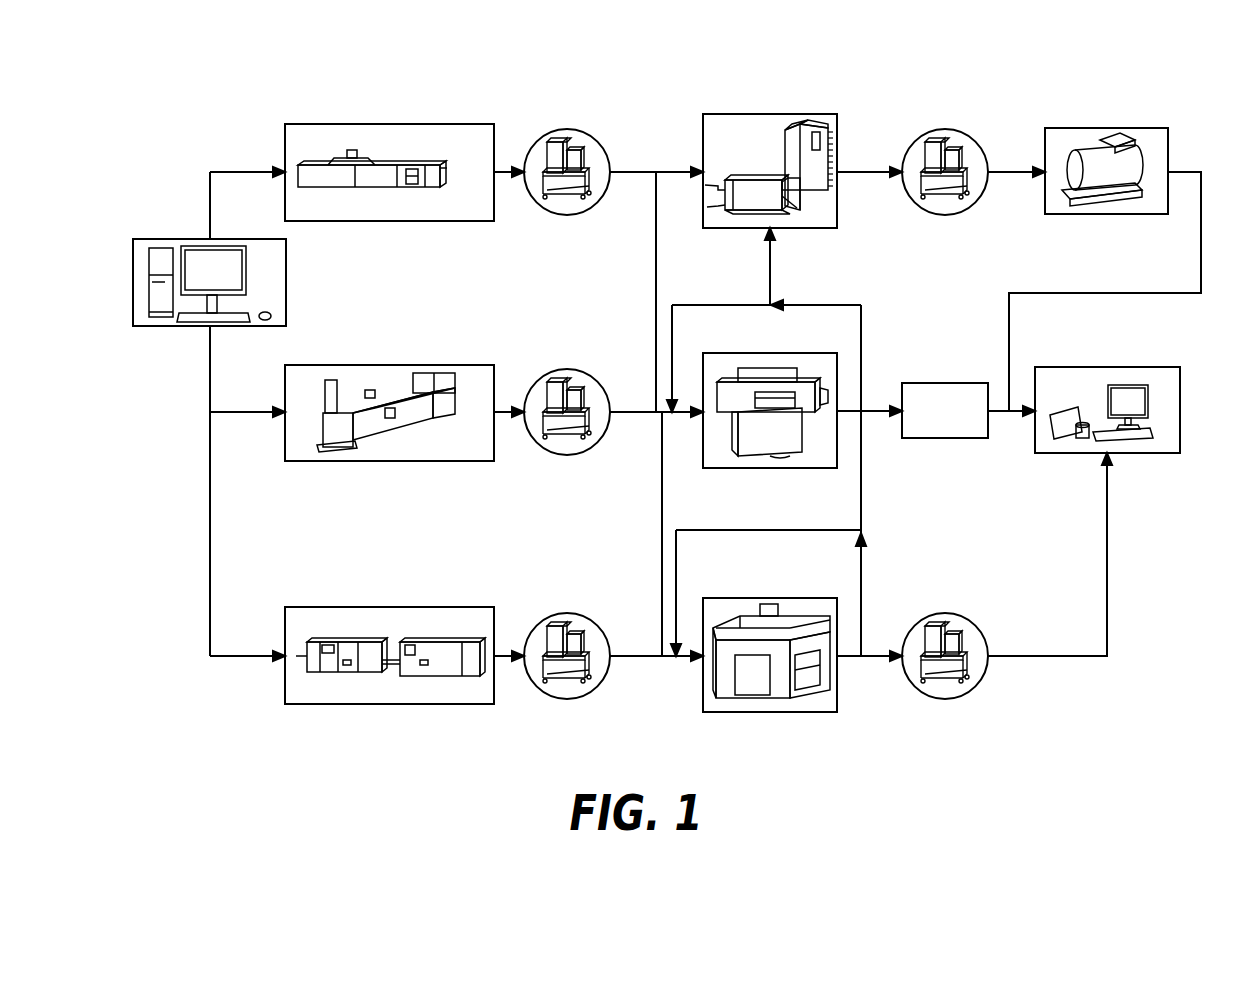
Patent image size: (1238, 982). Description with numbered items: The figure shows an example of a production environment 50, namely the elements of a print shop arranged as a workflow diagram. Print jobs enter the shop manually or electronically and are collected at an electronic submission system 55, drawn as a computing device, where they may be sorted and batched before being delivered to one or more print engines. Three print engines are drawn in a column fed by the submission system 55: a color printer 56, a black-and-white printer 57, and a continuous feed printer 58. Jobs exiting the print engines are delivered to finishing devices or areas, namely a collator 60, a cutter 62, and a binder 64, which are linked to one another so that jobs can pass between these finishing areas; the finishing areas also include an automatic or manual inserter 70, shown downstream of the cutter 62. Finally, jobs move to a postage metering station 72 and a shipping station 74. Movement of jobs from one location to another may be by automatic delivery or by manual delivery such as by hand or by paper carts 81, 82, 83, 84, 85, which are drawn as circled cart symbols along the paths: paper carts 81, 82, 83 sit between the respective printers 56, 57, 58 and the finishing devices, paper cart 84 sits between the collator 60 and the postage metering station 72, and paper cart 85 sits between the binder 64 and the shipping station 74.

The production environment 50 is at (234, 108).
The electronic submission system 55 is at (163, 327).
The color printer 56 is at (406, 222).
The black-and-white printer 57 is at (406, 462).
The continuous feed printer 58 is at (406, 705).
The collator 60 is at (780, 229).
The cutter 62 is at (781, 469).
The binder 64 is at (781, 713).
The inserter 70 is at (943, 439).
The postage metering station 72 is at (1103, 215).
The shipping station 74 is at (1135, 454).
The paper cart 81 is at (567, 215).
The paper cart 82 is at (567, 456).
The paper cart 83 is at (567, 699).
The paper cart 84 is at (945, 215).
The paper cart 85 is at (945, 699).